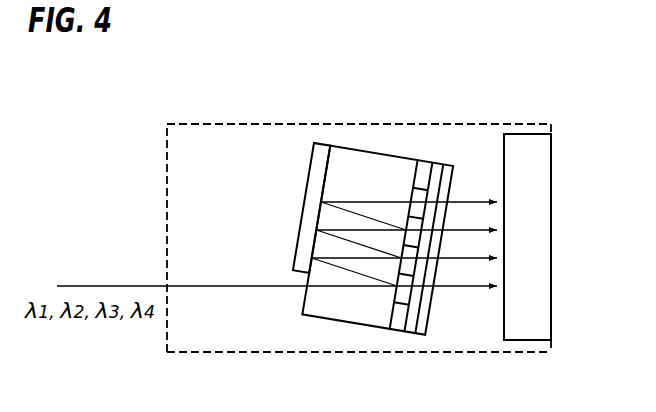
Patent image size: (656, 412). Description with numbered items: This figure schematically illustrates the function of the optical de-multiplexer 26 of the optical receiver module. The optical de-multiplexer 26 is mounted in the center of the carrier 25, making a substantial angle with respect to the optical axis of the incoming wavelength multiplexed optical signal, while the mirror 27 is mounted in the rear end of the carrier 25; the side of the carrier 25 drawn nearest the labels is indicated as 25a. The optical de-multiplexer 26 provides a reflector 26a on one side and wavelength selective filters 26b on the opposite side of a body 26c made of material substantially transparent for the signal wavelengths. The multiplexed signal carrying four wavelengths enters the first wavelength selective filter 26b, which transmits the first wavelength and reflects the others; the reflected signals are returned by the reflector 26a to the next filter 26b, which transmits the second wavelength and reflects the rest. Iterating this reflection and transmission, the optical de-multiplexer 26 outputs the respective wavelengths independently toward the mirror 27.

The carrier 25 is at (183, 214).
The bottom wall of housing 25a is at (551, 343).
The optical de-multiplexer 26 is at (331, 239).
The reflector 26a is at (312, 200).
The wavelength selective filters 26b is at (398, 315).
The body 26c is at (355, 313).
The mirror 27 is at (540, 153).